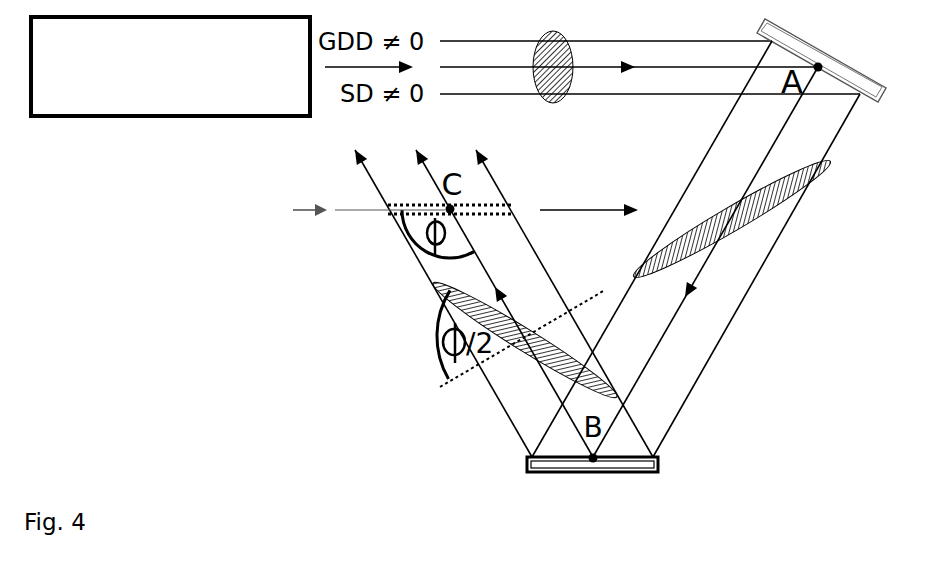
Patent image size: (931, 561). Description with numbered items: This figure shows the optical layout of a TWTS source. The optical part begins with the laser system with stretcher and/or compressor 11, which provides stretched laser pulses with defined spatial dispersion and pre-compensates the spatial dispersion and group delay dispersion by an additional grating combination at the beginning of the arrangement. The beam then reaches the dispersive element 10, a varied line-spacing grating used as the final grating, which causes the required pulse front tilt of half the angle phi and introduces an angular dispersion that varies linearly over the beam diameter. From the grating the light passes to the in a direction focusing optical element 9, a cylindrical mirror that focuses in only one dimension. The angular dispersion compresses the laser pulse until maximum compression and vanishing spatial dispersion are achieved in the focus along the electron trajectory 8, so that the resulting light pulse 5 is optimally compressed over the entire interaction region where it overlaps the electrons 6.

The resulting light pulse 5 is at (589, 194).
The electrons 6 is at (369, 194).
The focus along the electron trajectory 8 is at (450, 193).
The in a direction focusing optical element 9 is at (592, 481).
The dispersive element 10 is at (793, 17).
The laser system with stretcher and/or compressor 11 is at (170, 66).